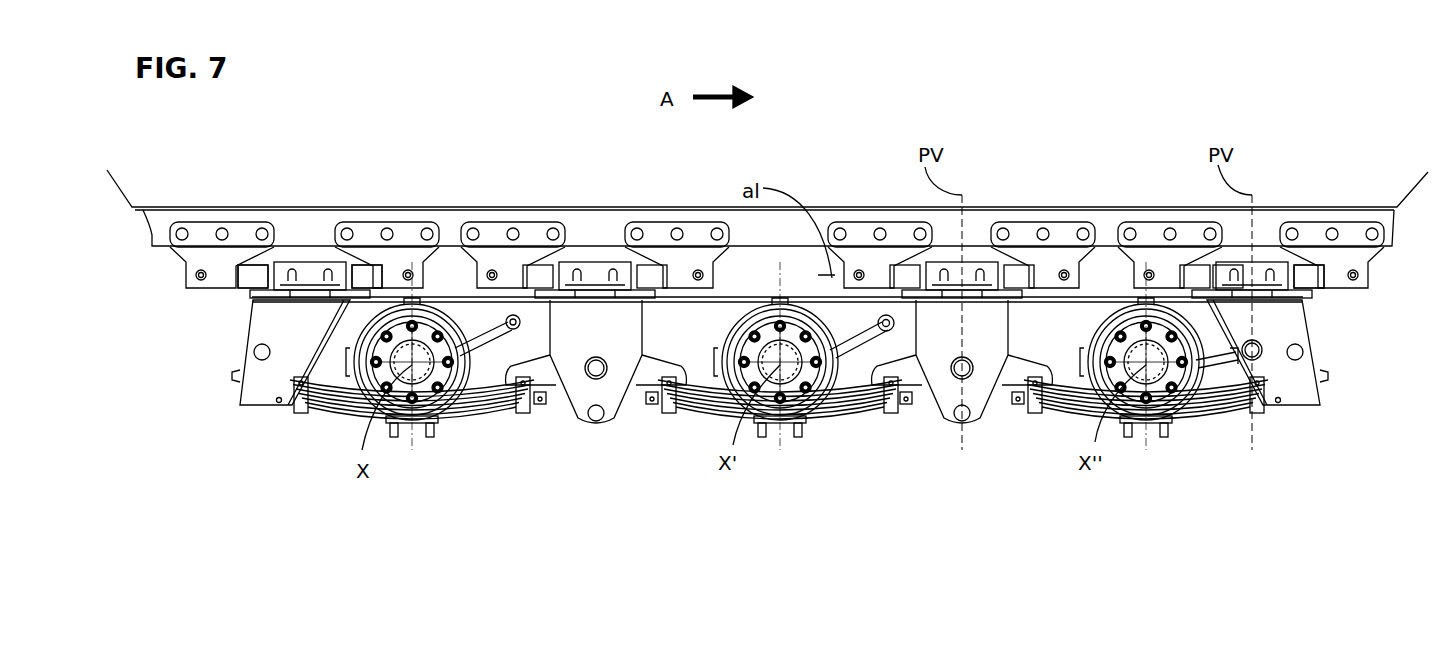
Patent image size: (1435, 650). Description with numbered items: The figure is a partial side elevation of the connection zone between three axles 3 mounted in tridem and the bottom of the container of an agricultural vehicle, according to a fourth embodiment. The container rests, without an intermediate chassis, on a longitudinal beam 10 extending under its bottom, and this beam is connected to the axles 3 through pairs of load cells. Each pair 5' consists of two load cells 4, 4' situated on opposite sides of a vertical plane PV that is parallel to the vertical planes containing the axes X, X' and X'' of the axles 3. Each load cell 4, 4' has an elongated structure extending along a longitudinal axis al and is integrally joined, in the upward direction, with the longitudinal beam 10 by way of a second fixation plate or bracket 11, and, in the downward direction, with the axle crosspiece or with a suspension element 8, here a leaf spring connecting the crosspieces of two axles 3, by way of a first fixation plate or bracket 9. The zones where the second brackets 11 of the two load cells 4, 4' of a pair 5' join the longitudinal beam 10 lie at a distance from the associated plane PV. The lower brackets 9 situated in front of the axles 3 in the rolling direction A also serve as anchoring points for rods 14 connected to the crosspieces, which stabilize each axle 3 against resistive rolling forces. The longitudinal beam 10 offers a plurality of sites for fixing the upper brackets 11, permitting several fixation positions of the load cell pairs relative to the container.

The axle 3 is at (456, 455).
The load cell 4 is at (740, 229).
The load cell 4' is at (854, 229).
The pair of load cells 5' is at (781, 207).
The suspension element 8 is at (480, 415).
The first fixation plate or bracket 9 is at (325, 362).
The longitudinal beam 10 is at (153, 235).
The second fixation plate or bracket 11 is at (190, 222).
The rod 14 is at (865, 308).